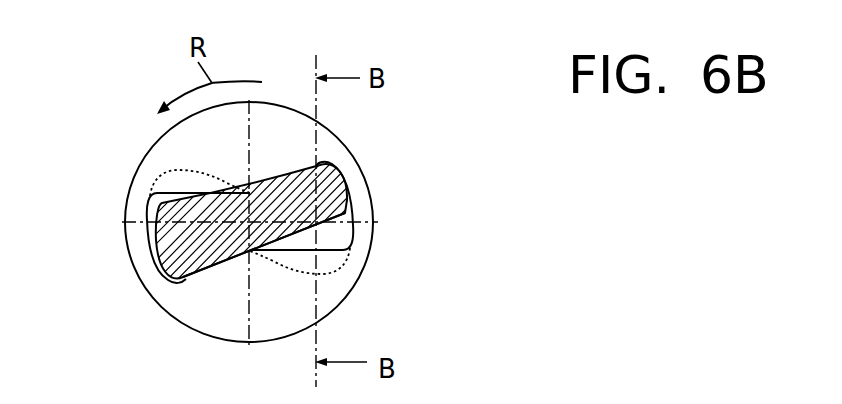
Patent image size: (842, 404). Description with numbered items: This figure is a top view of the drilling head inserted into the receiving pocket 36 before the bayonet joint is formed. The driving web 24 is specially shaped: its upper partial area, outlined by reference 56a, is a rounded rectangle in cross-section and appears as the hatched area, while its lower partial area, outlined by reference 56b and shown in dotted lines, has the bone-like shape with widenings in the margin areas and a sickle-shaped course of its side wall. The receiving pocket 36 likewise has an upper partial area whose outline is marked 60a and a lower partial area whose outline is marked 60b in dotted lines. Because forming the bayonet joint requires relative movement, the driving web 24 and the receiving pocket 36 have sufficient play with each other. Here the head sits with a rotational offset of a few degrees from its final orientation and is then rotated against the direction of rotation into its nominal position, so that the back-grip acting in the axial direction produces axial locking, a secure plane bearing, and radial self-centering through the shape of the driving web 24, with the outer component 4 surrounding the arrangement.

The housing 4 is at (352, 148).
The driving web 24 is at (345, 208).
The receiving pocket 36 is at (348, 237).
The outline of the upper partial area of the driving web 56a is at (180, 280).
The outline of the lower partial area of the driving web 56b is at (157, 196).
The outline of the upper partial area of the receiving pocket 60a is at (353, 224).
The outline of the lower partial area of the receiving pocket 60b is at (337, 266).